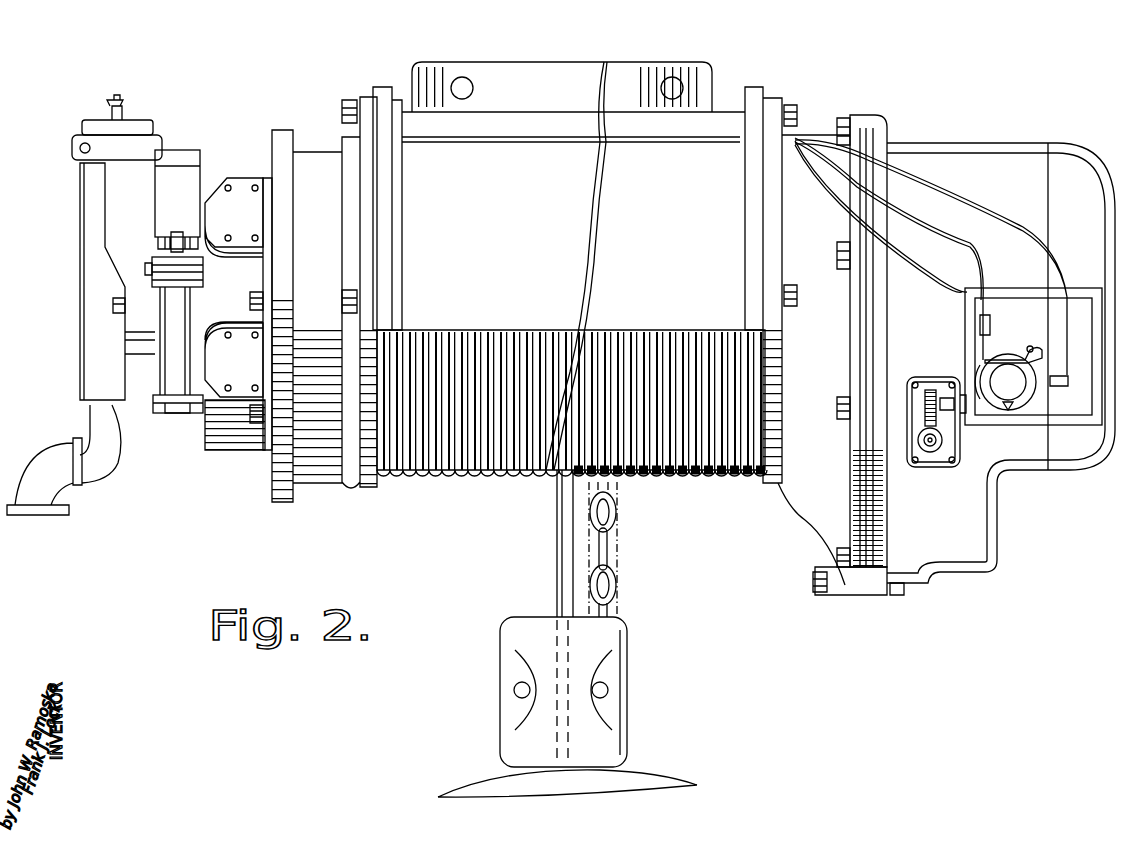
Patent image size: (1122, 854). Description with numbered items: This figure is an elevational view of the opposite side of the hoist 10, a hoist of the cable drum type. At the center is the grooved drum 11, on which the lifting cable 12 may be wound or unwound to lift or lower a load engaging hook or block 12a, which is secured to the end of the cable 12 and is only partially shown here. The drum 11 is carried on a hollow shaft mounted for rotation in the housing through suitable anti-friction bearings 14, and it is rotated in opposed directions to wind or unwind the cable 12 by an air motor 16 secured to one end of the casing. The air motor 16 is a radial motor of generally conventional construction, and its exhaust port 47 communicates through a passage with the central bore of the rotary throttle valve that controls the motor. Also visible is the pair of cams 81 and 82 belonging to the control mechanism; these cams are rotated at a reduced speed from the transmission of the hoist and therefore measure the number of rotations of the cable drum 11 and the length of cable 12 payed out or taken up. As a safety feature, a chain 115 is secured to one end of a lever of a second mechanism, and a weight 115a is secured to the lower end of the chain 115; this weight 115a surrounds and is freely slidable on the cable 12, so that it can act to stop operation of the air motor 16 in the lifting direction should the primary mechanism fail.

The hoist 10 is at (337, 94).
The grooved drum 11 is at (484, 494).
The lifting cable 12 is at (557, 578).
The load engaging hook or block 12a is at (468, 783).
The anti-friction bearings 14 is at (932, 348).
The air motor 16 is at (230, 178).
The exhaust port 47 is at (90, 406).
The cam 81 is at (1013, 412).
The cam 82 is at (1041, 356).
The chain 115 is at (613, 582).
The weight 115a is at (626, 704).